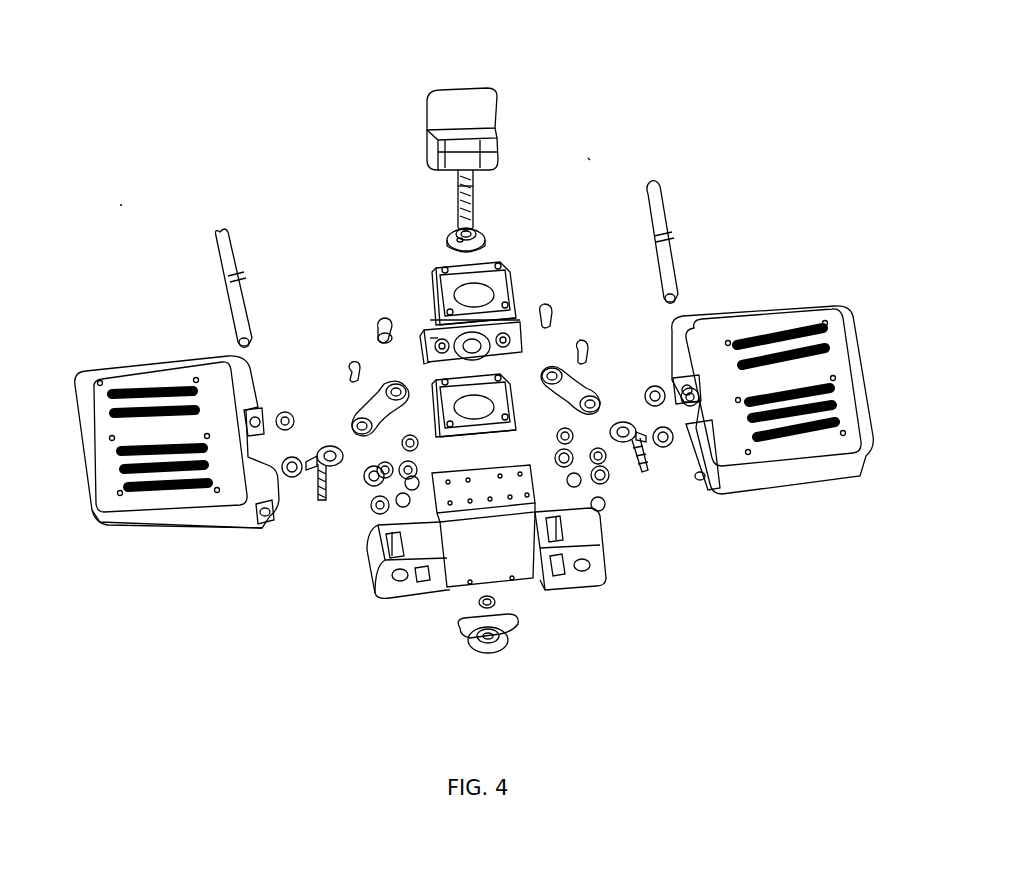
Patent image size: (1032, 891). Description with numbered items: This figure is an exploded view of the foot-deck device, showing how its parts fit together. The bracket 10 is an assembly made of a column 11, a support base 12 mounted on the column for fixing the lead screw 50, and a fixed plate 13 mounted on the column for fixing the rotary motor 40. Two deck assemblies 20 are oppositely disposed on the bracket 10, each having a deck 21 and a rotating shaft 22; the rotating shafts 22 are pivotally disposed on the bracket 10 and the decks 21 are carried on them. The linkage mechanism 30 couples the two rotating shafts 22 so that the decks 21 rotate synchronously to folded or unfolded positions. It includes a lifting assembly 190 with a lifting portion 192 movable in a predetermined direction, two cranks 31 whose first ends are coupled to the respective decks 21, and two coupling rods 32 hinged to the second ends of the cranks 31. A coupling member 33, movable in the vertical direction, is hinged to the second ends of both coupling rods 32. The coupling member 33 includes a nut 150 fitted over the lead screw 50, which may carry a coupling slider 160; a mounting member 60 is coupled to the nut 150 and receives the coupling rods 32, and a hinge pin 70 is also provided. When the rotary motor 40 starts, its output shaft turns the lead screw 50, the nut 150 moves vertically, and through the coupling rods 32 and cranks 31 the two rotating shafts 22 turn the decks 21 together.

The bracket 10 is at (596, 633).
The column 11 is at (518, 565).
The support base 12 is at (500, 642).
The fixed plate 13 is at (498, 290).
The deck assembly 20 is at (166, 212).
The deck 21 is at (168, 370).
The rotating shaft 22 is at (222, 250).
The linkage mechanism 30 is at (350, 209).
The crank 31 is at (323, 498).
The coupling rod 32 is at (372, 400).
The coupling member 33 is at (452, 236).
The rotary motor 40 is at (450, 110).
The lead screw 50 is at (456, 192).
The mounting member 60 is at (422, 328).
The hinge pin 70 is at (378, 326).
The nut 150 is at (476, 236).
The coupling slider 160 is at (425, 334).
The lifting assembly 190 is at (630, 98).
The lifting portion 192 is at (590, 158).